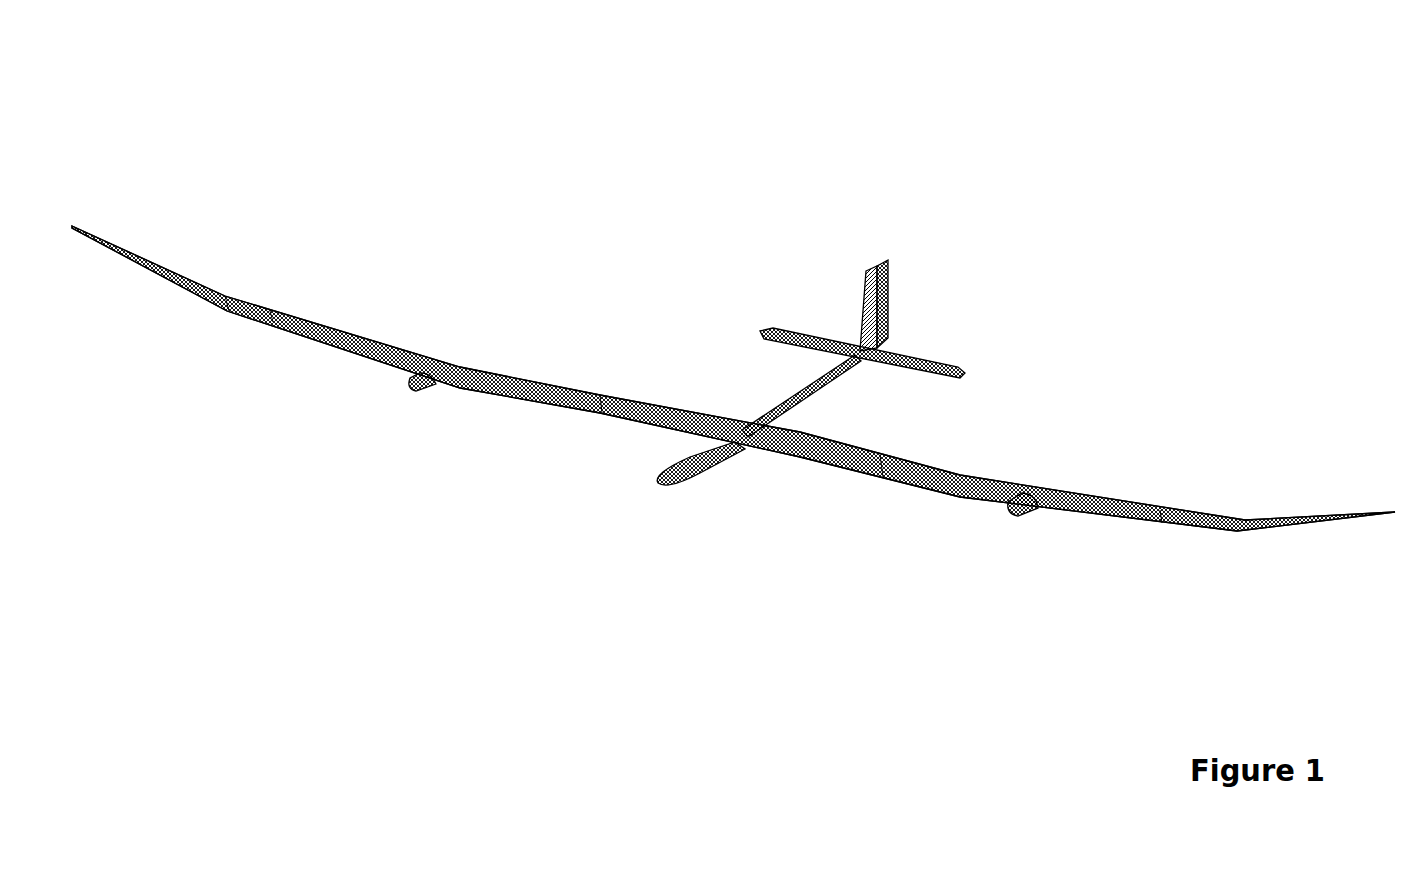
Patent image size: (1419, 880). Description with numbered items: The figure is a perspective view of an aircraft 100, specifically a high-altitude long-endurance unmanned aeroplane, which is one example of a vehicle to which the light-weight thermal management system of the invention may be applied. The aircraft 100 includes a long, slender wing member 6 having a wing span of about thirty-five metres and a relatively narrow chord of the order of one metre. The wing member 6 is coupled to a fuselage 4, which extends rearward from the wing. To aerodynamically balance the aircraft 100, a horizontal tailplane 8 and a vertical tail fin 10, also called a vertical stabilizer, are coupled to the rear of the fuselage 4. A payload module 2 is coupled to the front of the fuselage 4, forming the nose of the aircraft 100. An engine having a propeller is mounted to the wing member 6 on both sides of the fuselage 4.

The aircraft 100 is at (186, 89).
The payload module 2 is at (673, 483).
The fuselage 4 is at (763, 415).
The wing member 6 is at (983, 478).
The horizontal tailplane 8 is at (957, 365).
The vertical tail fin 10 is at (888, 273).